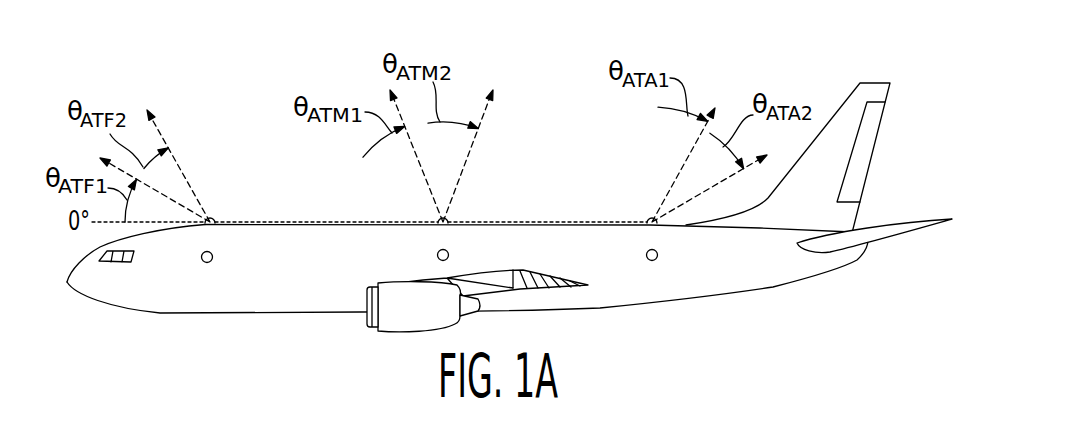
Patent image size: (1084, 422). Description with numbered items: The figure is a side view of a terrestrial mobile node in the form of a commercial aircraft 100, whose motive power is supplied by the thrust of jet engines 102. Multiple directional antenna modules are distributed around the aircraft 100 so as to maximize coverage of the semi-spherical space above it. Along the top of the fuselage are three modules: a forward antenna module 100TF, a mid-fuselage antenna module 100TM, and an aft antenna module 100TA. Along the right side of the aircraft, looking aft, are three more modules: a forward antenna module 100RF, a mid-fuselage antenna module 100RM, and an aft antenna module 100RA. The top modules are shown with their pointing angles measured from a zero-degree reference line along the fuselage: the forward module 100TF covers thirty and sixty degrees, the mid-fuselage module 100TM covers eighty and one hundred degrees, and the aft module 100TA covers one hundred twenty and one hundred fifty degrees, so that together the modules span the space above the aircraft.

The commercial aircraft 100 is at (775, 275).
The jet engines 102 is at (390, 322).
The forward antenna module on the top of the aircraft 100TF is at (213, 218).
The mid-fuselage antenna module on the top of the aircraft 100TM is at (450, 220).
The aft antenna module on the top of the aircraft 100TA is at (648, 218).
The forward antenna module on the right side of the aircraft 100RF is at (208, 263).
The mid-fuselage antenna module on the right side of the aircraft 100RM is at (438, 255).
The aft antenna module on the right side of the aircraft 100RA is at (655, 262).